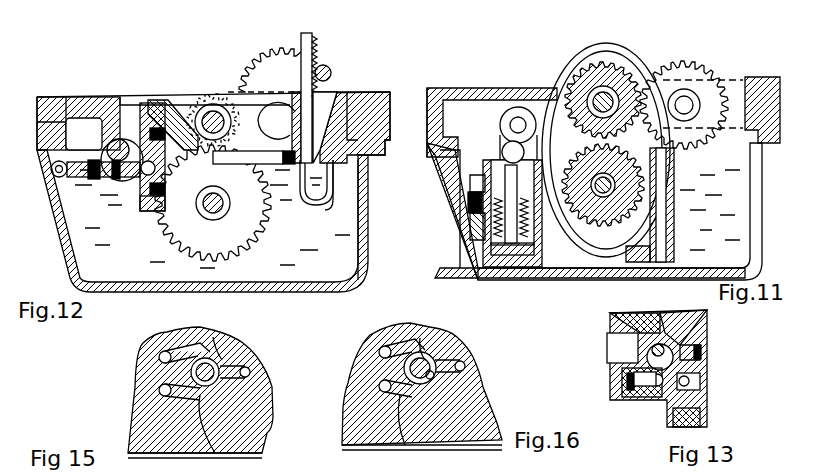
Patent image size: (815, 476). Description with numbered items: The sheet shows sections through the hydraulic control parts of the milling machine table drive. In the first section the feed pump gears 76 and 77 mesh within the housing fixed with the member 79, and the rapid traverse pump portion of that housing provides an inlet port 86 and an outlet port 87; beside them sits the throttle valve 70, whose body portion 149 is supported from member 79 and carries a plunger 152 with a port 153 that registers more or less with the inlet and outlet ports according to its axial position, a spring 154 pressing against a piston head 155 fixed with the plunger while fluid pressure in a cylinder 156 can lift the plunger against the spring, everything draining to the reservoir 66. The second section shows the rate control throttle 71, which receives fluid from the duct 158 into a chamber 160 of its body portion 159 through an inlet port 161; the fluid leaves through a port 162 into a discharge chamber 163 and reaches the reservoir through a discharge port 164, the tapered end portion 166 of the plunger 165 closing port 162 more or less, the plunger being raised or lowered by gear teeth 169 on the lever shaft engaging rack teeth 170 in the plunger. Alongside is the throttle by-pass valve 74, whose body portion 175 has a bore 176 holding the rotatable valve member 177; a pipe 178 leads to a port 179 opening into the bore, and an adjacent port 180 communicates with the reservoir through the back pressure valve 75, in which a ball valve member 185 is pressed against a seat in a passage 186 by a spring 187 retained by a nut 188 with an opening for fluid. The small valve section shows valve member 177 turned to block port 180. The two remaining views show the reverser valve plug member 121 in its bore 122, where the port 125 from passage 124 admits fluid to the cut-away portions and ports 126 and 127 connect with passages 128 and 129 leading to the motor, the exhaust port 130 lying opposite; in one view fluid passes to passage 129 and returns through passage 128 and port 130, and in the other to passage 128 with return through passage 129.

In FIG. 12, the reservoir 66 is at (338, 292).
In FIG. 11, the reservoir 66 is at (760, 230).
In FIG. 11, the throttle valve 70 is at (475, 255).
In FIG. 12, the rate control throttle 71 is at (370, 166).
In FIG. 13, the throttle by-pass valve 74 is at (622, 346).
In FIG. 12, the back pressure valve 75 is at (142, 211).
In FIG. 13, the back pressure valve 75 is at (660, 412).
In FIG. 11, the gear 76 is at (605, 62).
In FIG. 11, the gear 77 is at (636, 255).
In FIG. 12, the member 79 is at (390, 121).
In FIG. 11, the member 79 is at (427, 122).
In FIG. 11, the inlet port 86 is at (674, 222).
In FIG. 11, the outlet port 87 is at (548, 92).
In FIG. 16, the plug member 121 is at (445, 340).
In FIG. 16, the bore 122 is at (435, 378).
In FIG. 15, the passage 124 is at (245, 372).
In FIG. 15, the port 125 is at (232, 366).
In FIG. 16, the port 125 is at (450, 372).
In FIG. 15, the port 126 is at (232, 405).
In FIG. 16, the port 126 is at (460, 445).
In FIG. 15, the port 127 is at (213, 337).
In FIG. 16, the port 127 is at (420, 338).
In FIG. 15, the passage 128 is at (218, 455).
In FIG. 16, the passage 128 is at (406, 447).
In FIG. 15, the passage 129 is at (185, 345).
In FIG. 16, the passage 129 is at (410, 330).
In FIG. 15, the exhaust port 130 is at (195, 372).
In FIG. 16, the exhaust port 130 is at (405, 368).
In FIG. 11, the body portion 149 is at (470, 180).
In FIG. 11, the plunger 152 is at (494, 219).
In FIG. 11, the port 153 is at (468, 196).
In FIG. 11, the spring 154 is at (470, 230).
In FIG. 11, the piston head 155 is at (520, 245).
In FIG. 11, the cylinder 156 is at (535, 235).
In FIG. 12, the duct 158 is at (222, 164).
In FIG. 11, the duct 158 is at (503, 147).
In FIG. 12, the body portion 159 is at (333, 198).
In FIG. 12, the chamber 160 is at (332, 105).
In FIG. 12, the inlet port 161 is at (270, 122).
In FIG. 12, the port 162 is at (318, 168).
In FIG. 12, the discharge chamber 163 is at (305, 175).
In FIG. 12, the discharge port 164 is at (314, 203).
In FIG. 12, the plunger 165 is at (318, 50).
In FIG. 12, the tapered end portion 166 is at (296, 58).
In FIG. 12, the gear teeth 169 is at (330, 70).
In FIG. 12, the rack teeth 170 is at (312, 38).
In FIG. 12, the body portion 175 is at (155, 103).
In FIG. 13, the body portion 175 is at (697, 312).
In FIG. 12, the bore 176 is at (122, 181).
In FIG. 13, the bore 176 is at (612, 356).
In FIG. 12, the valve member 177 is at (84, 134).
In FIG. 13, the valve member 177 is at (699, 321).
In FIG. 12, the pipe 178 is at (55, 176).
In FIG. 12, the port 179 is at (98, 178).
In FIG. 13, the port 179 is at (634, 372).
In FIG. 12, the port 180 is at (173, 122).
In FIG. 13, the port 180 is at (705, 330).
In FIG. 13, the ball valve member 185 is at (700, 380).
In FIG. 13, the passage 186 is at (704, 350).
In FIG. 13, the spring 187 is at (640, 390).
In FIG. 13, the nut 188 is at (700, 410).